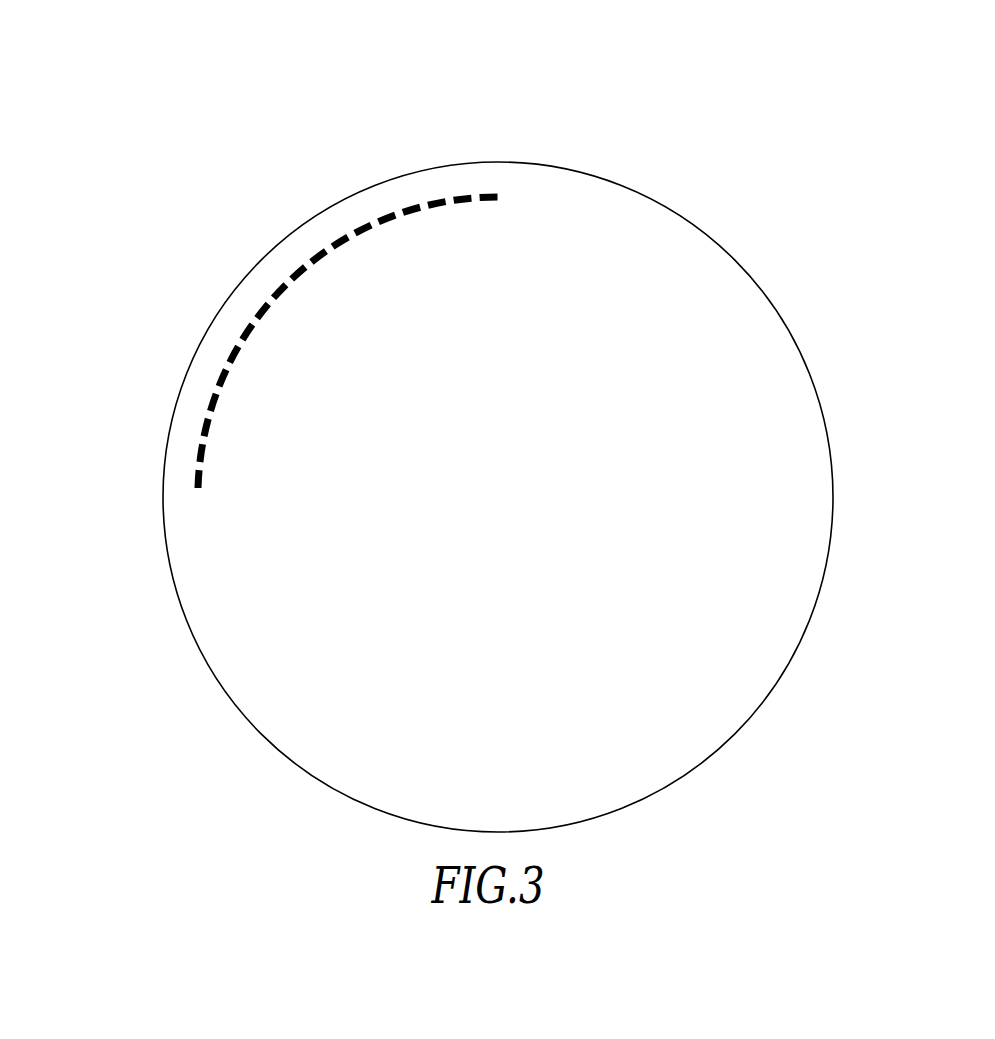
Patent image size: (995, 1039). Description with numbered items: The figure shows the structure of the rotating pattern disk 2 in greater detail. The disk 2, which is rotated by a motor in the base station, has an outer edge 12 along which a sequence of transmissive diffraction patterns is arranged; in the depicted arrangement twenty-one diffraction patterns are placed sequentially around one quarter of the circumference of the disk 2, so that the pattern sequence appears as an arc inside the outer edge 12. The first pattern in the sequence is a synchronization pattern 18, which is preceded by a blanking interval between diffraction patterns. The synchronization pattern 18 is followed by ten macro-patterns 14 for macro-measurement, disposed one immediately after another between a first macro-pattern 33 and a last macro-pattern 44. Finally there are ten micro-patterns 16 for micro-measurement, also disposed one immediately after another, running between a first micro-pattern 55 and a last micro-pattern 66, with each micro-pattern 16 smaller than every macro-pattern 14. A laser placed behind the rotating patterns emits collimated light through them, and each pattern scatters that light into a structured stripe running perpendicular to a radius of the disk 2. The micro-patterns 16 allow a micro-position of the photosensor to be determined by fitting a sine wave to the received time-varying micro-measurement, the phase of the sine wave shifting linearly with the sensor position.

The disk 2 is at (766, 124).
The outer edge 12 is at (600, 177).
The macro-patterns 14 is at (300, 155).
The micro-patterns 16 is at (160, 330).
The synchronization pattern 18 is at (507, 216).
The first macro-pattern 33 is at (463, 180).
The last macro-pattern 44 is at (275, 266).
The first micro-pattern 55 is at (290, 314).
The last micro-pattern 66 is at (218, 488).